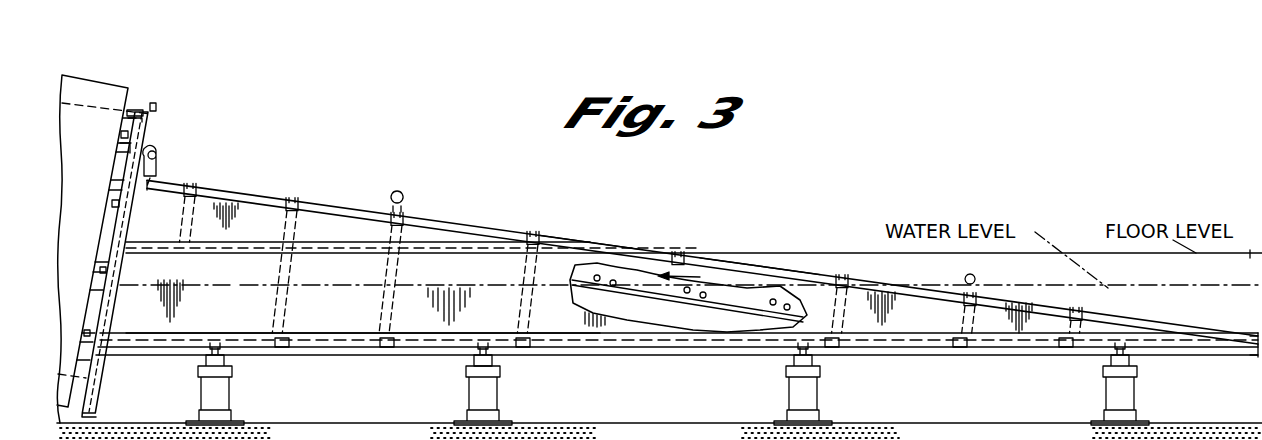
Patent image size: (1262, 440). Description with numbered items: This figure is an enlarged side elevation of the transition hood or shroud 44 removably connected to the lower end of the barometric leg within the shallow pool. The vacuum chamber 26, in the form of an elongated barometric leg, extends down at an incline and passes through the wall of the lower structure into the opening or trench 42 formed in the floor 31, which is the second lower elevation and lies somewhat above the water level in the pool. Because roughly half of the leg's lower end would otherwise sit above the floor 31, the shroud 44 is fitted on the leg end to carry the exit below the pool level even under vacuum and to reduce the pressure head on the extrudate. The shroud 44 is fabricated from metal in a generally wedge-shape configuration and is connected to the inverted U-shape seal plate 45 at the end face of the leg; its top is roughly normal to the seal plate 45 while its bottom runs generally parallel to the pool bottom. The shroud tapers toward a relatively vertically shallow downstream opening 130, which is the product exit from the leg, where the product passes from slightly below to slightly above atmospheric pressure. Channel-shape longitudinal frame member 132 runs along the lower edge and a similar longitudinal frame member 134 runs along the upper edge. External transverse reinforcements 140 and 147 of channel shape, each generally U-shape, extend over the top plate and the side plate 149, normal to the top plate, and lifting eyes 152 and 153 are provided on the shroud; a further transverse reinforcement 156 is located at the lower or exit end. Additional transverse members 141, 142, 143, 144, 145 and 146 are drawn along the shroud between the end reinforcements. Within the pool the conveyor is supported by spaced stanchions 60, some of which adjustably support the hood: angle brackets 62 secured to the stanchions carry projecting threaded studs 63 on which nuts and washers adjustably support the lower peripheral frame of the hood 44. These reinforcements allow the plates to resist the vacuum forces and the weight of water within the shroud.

The vacuum chamber 26 is at (80, 73).
The seal plate 45 is at (152, 119).
The transition hood or shroud 44 is at (462, 217).
The longitudinal frame member 134 is at (584, 241).
The opening or trench 42 is at (765, 243).
The floor 31 is at (795, 252).
The longitudinal frame member 132 is at (888, 357).
The side plate 149 is at (338, 318).
The downstream opening 130 is at (1256, 334).
The transverse reinforcement 156 is at (1255, 348).
The transverse reinforcement 147 is at (200, 212).
The hanger 146 is at (300, 228).
The hanger 145 is at (390, 233).
The lifting eye 152 is at (398, 205).
The hanger 144 is at (552, 232).
The bracket 143 is at (693, 258).
The hanger 142 is at (846, 316).
The hanger 141 is at (987, 332).
The lifting eye 153 is at (972, 284).
The transverse reinforcement 140 is at (1108, 316).
The stanchion 60 is at (229, 392).
The angle bracket 62 is at (485, 384).
The threaded stud 63 is at (477, 360).